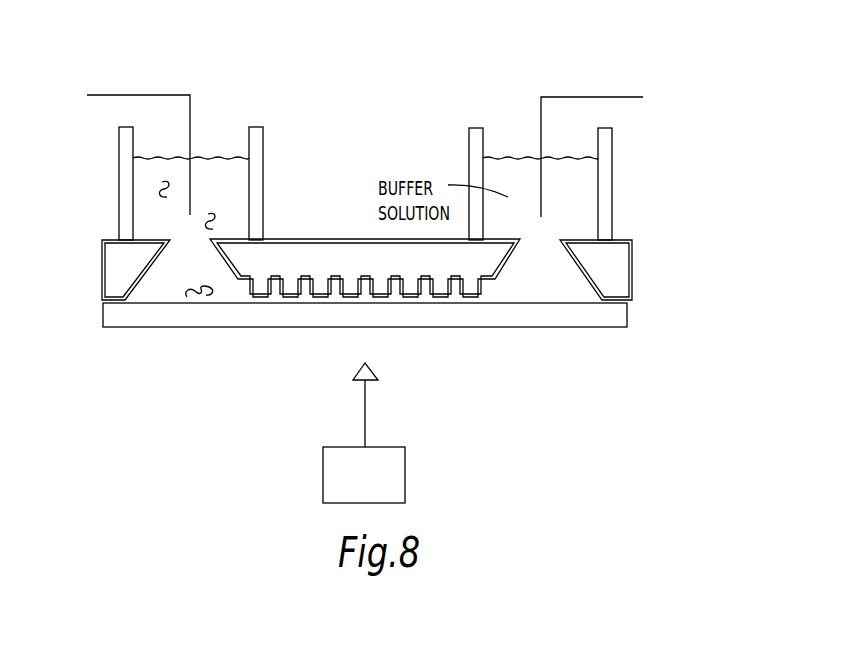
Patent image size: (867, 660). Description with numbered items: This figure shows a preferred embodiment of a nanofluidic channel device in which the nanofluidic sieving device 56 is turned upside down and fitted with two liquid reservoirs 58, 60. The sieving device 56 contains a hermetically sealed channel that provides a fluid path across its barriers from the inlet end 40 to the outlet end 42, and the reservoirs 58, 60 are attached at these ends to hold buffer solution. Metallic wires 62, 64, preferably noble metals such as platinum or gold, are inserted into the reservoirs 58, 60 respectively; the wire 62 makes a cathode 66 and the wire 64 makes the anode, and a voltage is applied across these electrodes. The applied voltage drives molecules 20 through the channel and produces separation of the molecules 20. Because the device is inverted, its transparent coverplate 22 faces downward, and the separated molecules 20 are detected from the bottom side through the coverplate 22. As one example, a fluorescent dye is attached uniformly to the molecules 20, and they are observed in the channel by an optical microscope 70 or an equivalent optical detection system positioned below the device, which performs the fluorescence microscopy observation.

The molecules 20 is at (177, 292).
The transparent coverplate 22 is at (543, 328).
The inlet end 40 is at (188, 238).
The outlet end 42 is at (543, 238).
The nanofluidic sieving device 56 is at (721, 200).
The liquid reservoir 58 is at (118, 144).
The liquid reservoir 60 is at (468, 135).
The metallic wire 62 is at (138, 95).
The metallic wire 64 is at (595, 97).
The cathode 66 is at (232, 107).
The optical microscope 70 is at (342, 477).